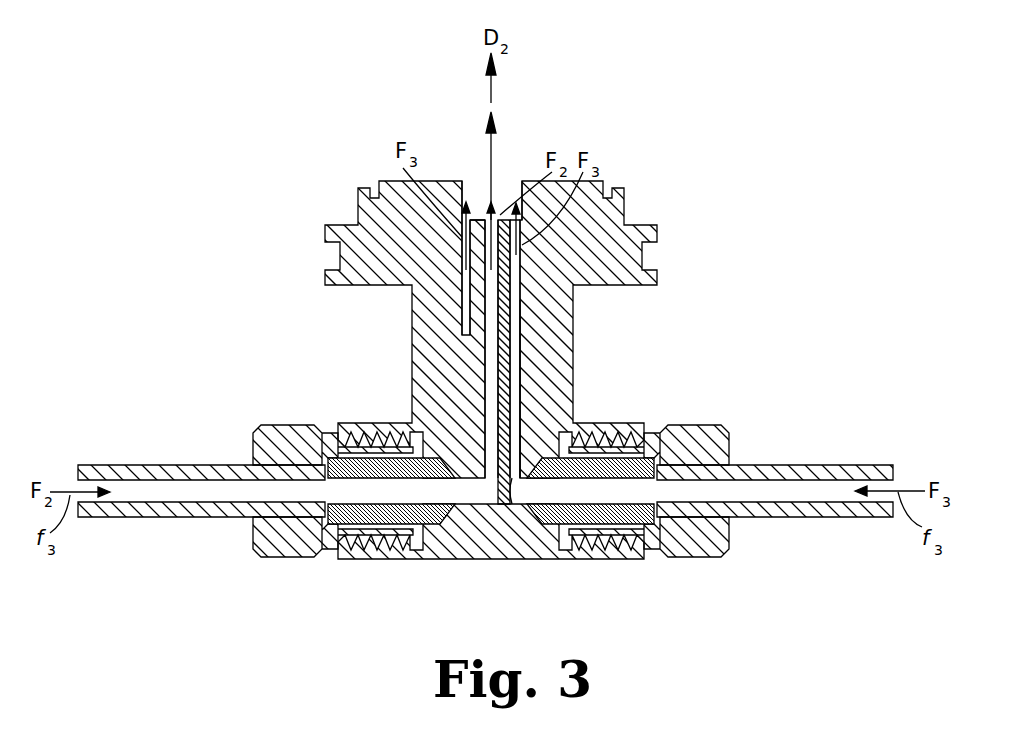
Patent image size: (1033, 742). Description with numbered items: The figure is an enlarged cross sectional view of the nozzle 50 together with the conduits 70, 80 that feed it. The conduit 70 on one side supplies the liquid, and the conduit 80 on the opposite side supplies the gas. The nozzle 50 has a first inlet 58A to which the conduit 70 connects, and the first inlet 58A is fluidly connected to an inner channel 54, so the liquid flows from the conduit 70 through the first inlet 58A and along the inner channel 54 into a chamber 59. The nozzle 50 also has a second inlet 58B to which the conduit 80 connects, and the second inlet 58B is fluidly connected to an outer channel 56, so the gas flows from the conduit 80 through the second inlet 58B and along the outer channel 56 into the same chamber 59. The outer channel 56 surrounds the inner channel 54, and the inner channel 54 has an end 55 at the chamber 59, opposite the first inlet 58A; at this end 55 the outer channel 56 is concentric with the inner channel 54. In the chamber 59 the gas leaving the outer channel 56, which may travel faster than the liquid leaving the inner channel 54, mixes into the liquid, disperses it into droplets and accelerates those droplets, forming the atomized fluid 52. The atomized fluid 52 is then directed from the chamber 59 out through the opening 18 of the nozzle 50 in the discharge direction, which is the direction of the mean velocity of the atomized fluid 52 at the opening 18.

The nozzle 50 is at (495, 553).
The atomized fluid 52 is at (493, 147).
The inner channel 54 is at (490, 280).
The end of the inner channel 55 is at (487, 207).
The outer channel 56 is at (465, 328).
The chamber 59 is at (503, 196).
The opening 18 is at (484, 192).
The first inlet 58A is at (391, 436).
The second inlet 58B is at (600, 436).
The conduit 70 is at (126, 465).
The conduit 80 is at (846, 465).